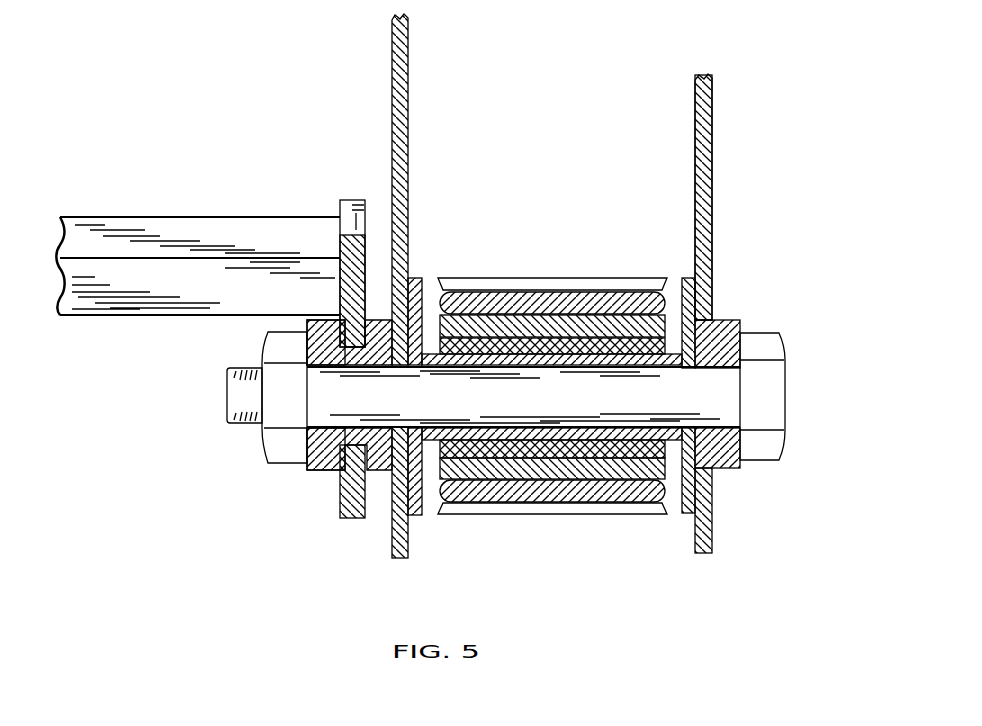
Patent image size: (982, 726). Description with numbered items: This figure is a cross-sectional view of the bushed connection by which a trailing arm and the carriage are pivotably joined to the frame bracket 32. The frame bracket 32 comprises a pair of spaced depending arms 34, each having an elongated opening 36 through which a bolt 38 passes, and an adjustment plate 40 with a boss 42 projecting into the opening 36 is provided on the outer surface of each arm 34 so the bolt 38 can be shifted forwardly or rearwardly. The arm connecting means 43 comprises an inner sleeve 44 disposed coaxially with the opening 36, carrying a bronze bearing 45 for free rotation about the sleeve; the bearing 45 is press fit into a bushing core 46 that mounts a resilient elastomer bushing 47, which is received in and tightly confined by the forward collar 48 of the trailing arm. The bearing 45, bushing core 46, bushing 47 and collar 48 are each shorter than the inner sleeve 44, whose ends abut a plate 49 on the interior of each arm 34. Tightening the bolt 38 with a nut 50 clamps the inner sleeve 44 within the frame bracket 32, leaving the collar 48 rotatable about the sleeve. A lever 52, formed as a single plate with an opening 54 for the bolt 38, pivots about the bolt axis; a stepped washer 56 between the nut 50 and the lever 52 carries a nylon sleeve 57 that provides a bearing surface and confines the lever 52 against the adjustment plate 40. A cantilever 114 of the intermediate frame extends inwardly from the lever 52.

The cantilever 114 is at (165, 282).
The lever 52 is at (355, 200).
The opening 54 is at (340, 497).
The arm 34 is at (400, 152).
The frame bracket 32 is at (694, 114).
The adjustment plate 40 is at (380, 470).
The stepped washer 56 is at (263, 338).
The nylon sleeve 57 is at (320, 470).
The plate 49 is at (415, 505).
The elongated opening 36 is at (706, 292).
The nut 50 is at (275, 415).
The boss 42 is at (712, 367).
The bolt 38 is at (770, 407).
The inner sleeve 44 is at (623, 433).
The bronze bearing 45 is at (573, 450).
The bushing core 46 is at (513, 470).
The elastomer bushing 47 is at (497, 300).
The forward collar 48 is at (546, 283).
The arm connecting means 43 is at (450, 261).